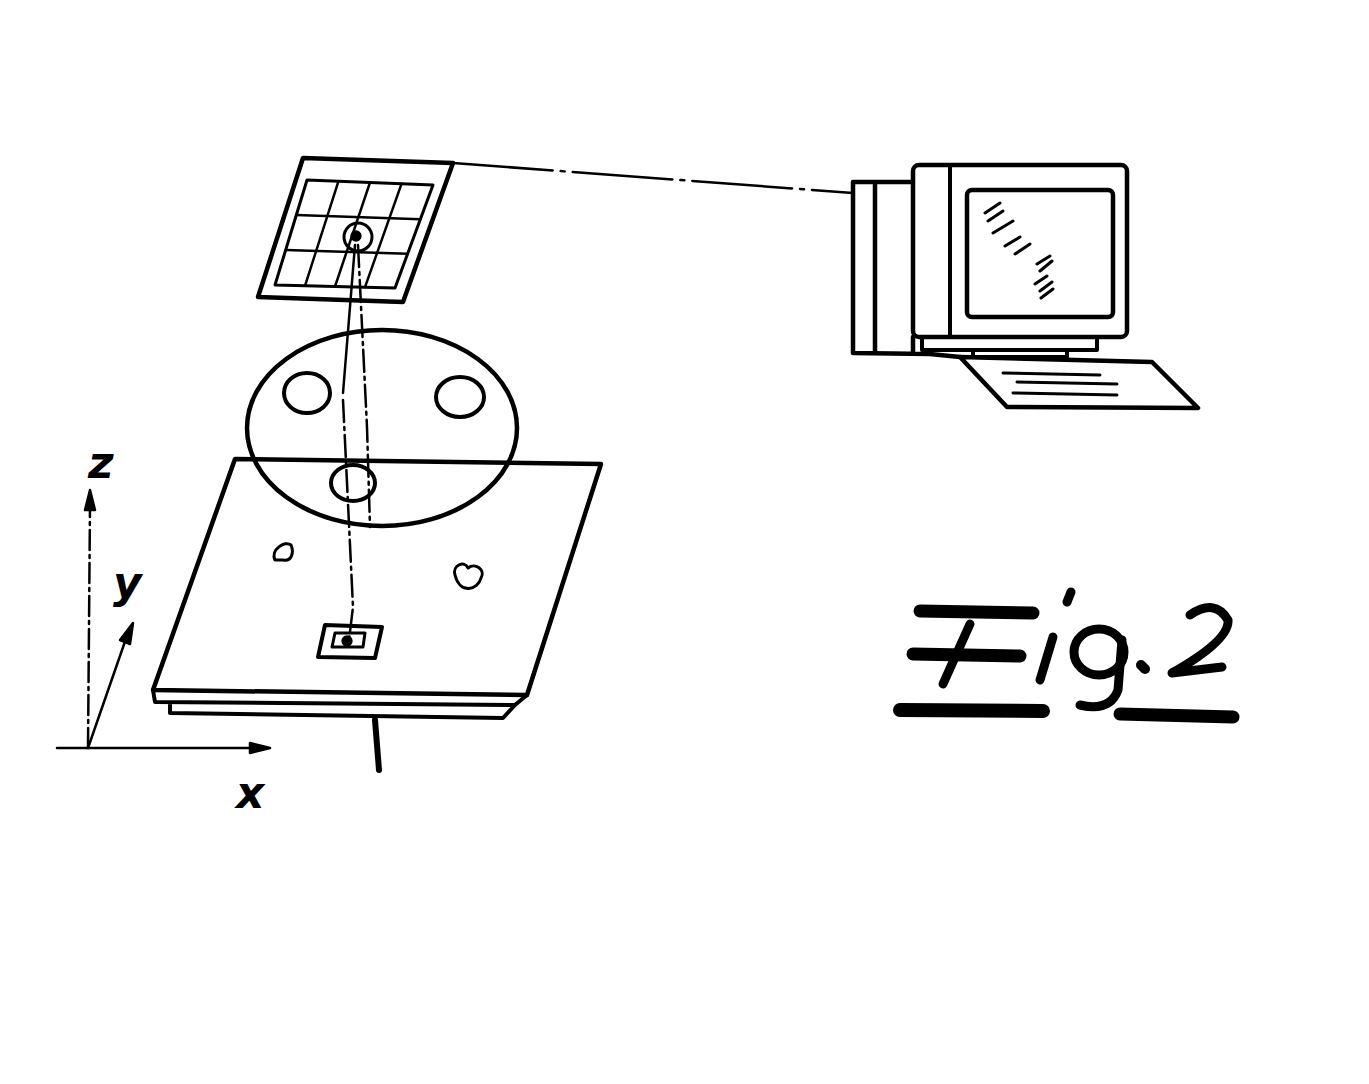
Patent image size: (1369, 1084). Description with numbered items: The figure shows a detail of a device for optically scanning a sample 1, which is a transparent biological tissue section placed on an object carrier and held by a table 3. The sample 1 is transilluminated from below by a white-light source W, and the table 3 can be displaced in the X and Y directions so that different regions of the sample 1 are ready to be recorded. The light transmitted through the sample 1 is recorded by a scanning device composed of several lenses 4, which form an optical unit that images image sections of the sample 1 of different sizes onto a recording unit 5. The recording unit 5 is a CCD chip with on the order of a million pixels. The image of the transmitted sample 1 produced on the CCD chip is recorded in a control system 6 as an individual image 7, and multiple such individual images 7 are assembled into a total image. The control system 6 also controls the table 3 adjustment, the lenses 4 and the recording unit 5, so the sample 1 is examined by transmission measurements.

The sample 1 is at (370, 527).
The table 3 is at (565, 522).
The lenses 4 is at (353, 463).
The recording unit 5 is at (422, 255).
The control system 6 is at (1165, 250).
The individual image 7 is at (323, 236).
The white-light source W is at (379, 770).